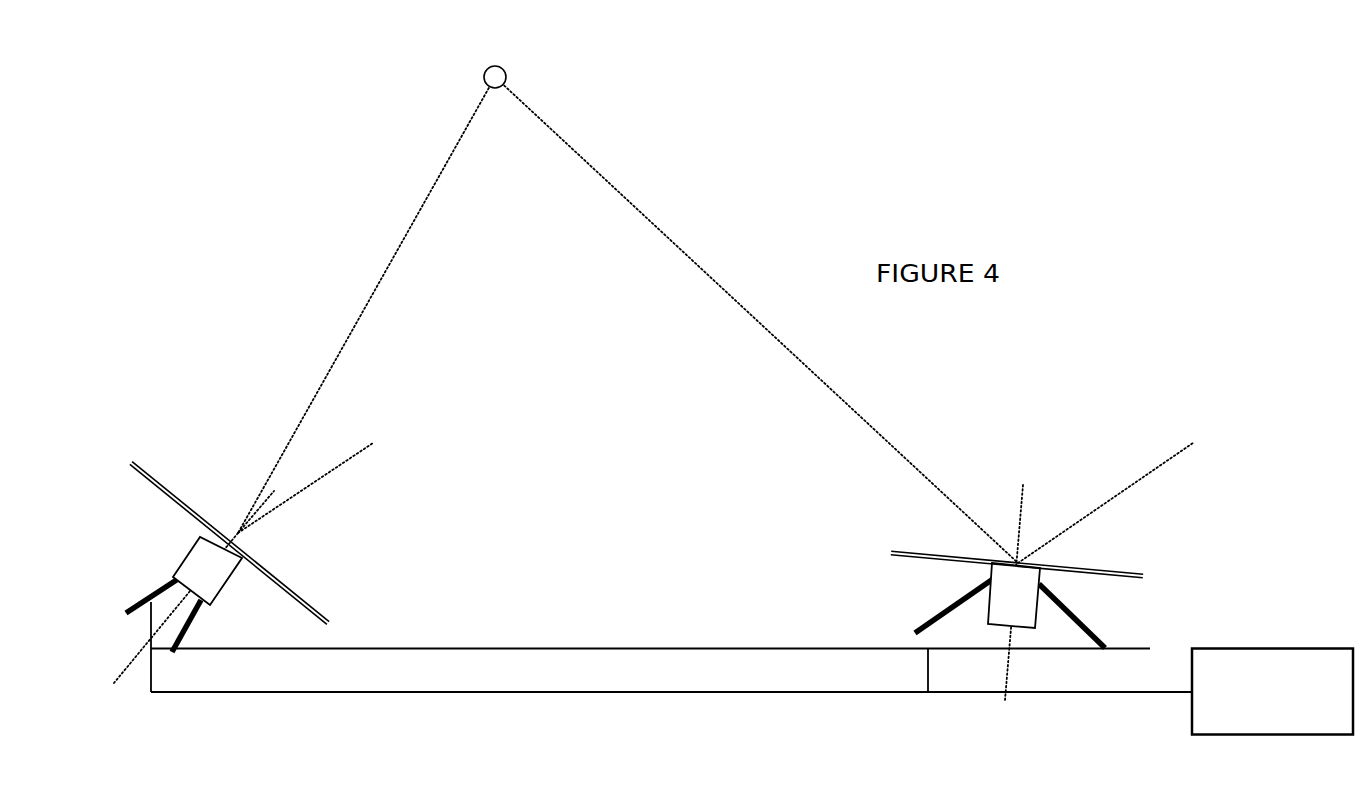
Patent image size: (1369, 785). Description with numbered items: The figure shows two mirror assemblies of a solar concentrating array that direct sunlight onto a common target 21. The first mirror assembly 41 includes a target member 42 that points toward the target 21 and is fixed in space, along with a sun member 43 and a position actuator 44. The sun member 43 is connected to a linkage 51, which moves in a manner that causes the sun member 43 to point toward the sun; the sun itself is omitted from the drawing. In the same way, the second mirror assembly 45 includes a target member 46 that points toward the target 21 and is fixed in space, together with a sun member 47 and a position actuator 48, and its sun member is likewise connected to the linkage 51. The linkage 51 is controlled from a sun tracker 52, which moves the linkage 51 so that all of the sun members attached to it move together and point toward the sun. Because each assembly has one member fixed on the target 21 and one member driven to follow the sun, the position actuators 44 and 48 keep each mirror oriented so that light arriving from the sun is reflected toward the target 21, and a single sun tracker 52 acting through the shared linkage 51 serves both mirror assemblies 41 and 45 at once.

The target 21 is at (489, 70).
The mirror assembly 41 is at (1116, 570).
The target member 42 is at (1087, 622).
The sun member 43 is at (948, 607).
The position actuator 44 is at (1005, 580).
The mirror assembly 45 is at (307, 602).
The target member 46 is at (192, 622).
The sun member 47 is at (140, 605).
The position actuator 48 is at (213, 552).
The linkage 51 is at (670, 693).
The sun tracker 52 is at (1262, 647).